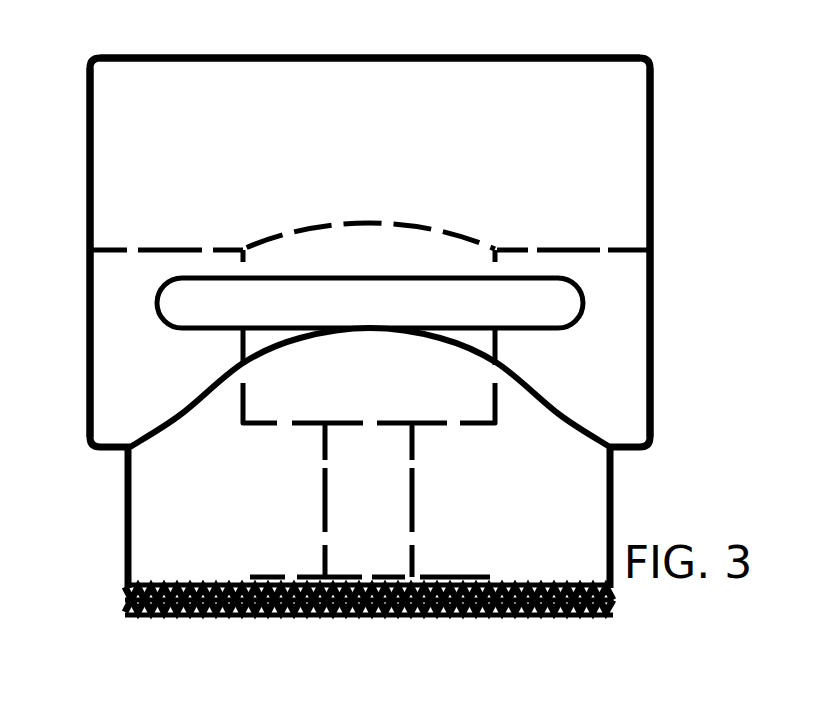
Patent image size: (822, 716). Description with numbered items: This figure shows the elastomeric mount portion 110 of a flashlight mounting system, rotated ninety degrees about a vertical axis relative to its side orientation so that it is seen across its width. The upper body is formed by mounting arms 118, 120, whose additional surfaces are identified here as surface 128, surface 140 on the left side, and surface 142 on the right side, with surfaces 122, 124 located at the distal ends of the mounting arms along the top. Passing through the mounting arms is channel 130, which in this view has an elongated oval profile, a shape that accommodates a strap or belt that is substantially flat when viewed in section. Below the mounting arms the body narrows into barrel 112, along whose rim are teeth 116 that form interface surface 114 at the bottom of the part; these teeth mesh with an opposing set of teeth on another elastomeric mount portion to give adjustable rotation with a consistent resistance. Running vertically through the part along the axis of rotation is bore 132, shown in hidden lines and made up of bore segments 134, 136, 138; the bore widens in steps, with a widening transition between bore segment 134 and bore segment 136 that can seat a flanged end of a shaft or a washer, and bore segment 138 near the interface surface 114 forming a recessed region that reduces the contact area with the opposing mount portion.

The elastomeric mount portion 110 is at (686, 72).
The barrel 112 is at (148, 533).
The interface surface 114 is at (483, 628).
The teeth 116 is at (325, 645).
The mounting arm 118 is at (428, 252).
The mounting arm 120 is at (655, 132).
The surface 122 is at (370, 29).
The surface 124 is at (155, 42).
The surface 128 is at (476, 141).
The channel 130 is at (458, 316).
The bore 132 is at (397, 0).
The bore segment 134 is at (232, 357).
The bore segment 136 is at (312, 492).
The bore segment 138 is at (240, 576).
The surface 140 is at (76, 200).
The surface 142 is at (665, 200).